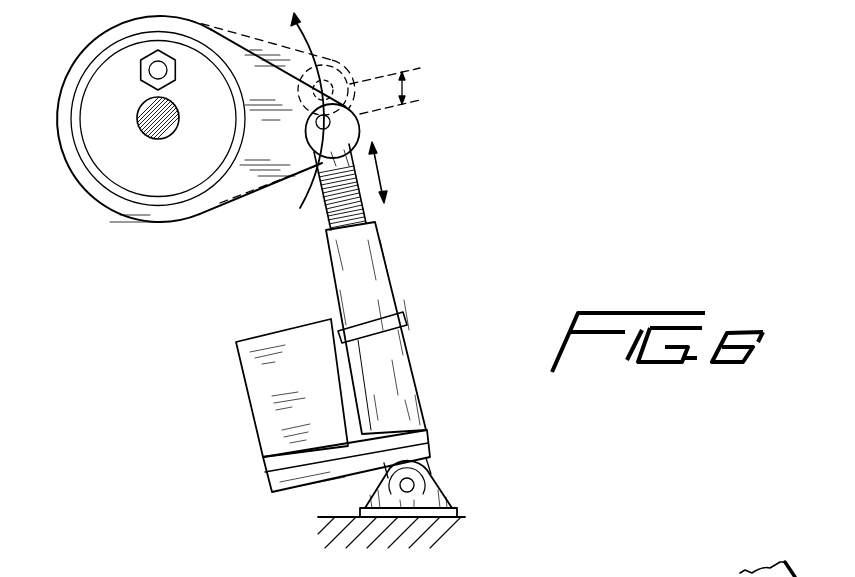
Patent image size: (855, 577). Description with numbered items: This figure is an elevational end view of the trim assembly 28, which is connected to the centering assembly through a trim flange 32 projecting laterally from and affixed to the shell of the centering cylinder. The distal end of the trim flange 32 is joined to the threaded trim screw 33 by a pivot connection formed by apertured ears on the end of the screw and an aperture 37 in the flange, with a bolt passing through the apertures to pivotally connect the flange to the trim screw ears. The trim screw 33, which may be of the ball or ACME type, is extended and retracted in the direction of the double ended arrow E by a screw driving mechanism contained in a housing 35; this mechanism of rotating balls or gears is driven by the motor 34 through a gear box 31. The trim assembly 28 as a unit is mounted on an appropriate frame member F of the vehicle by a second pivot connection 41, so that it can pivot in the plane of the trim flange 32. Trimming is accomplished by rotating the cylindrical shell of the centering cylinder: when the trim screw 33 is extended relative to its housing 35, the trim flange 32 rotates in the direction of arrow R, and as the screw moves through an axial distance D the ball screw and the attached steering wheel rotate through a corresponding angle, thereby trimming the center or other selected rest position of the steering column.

The trim assembly 28 is at (238, 294).
The gear box 31 is at (270, 485).
The trim flange 32 is at (277, 90).
The trim screw 33 is at (327, 222).
The motor 34 is at (238, 362).
The housing 35 is at (395, 290).
The aperture 37 is at (340, 124).
The second pivot connection 41 is at (446, 472).
The arrow R is at (307, 40).
The axial distance D is at (407, 87).
The double ended arrow E is at (380, 177).
The frame member F is at (470, 515).